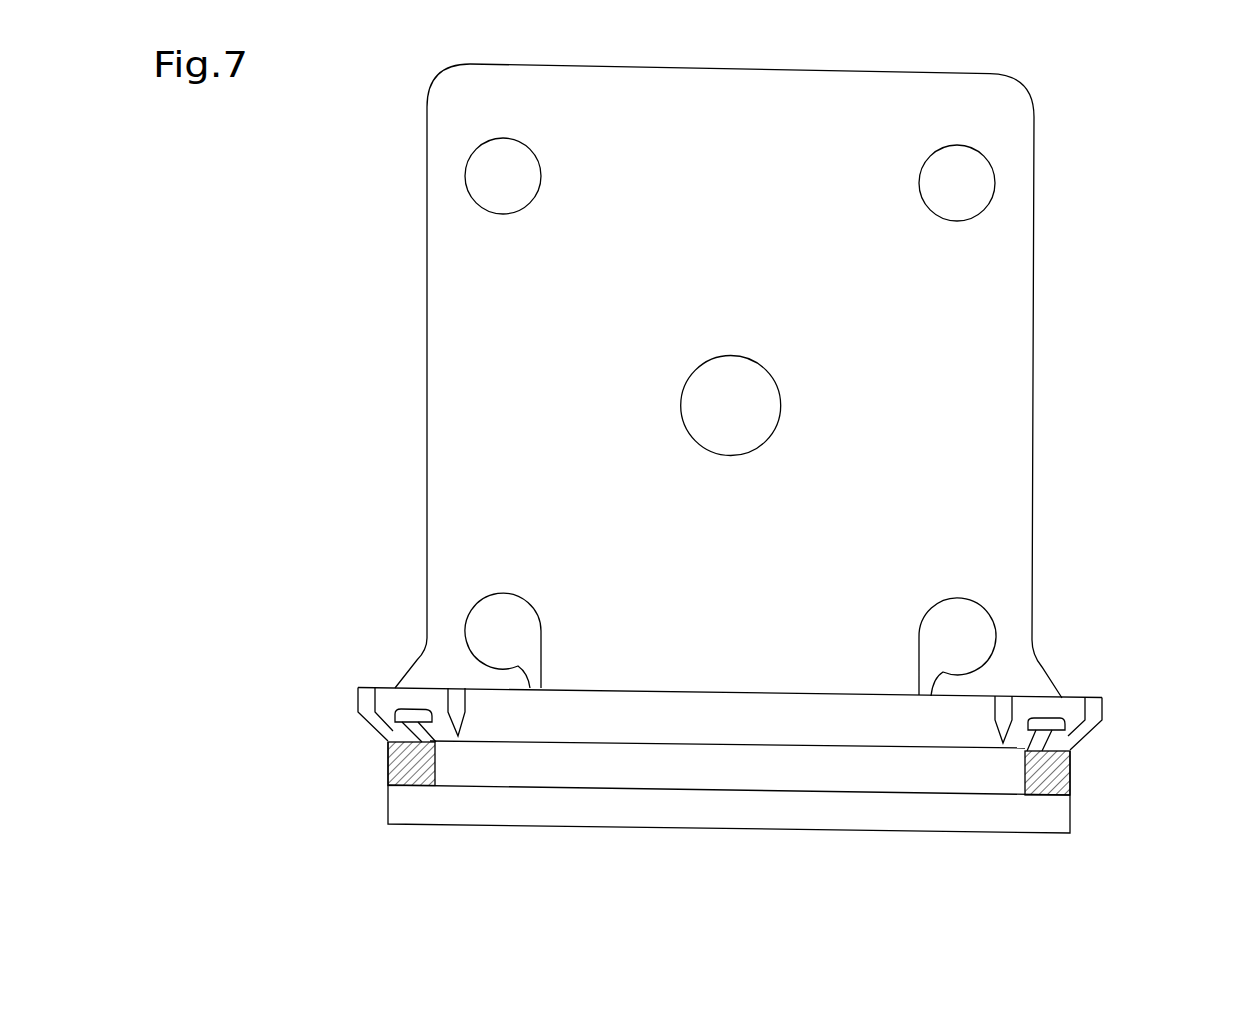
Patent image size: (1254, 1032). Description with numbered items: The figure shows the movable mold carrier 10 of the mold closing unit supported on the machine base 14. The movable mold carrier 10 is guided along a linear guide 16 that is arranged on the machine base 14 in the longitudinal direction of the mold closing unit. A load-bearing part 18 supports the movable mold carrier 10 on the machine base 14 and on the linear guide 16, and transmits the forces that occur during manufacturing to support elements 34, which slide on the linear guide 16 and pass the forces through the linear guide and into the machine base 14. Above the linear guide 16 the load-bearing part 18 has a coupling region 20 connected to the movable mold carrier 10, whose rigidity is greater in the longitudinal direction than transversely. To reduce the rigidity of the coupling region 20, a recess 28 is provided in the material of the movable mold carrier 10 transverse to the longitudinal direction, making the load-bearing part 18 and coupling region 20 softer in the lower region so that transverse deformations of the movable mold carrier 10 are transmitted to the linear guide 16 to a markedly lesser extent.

The movable mold carrier 10 is at (980, 330).
The machine base 14 is at (770, 805).
The linear guide 16 is at (392, 752).
The load-bearing part 18 is at (432, 677).
The coupling region 20 is at (408, 628).
The recess 28 is at (534, 682).
The support element 34 is at (390, 707).